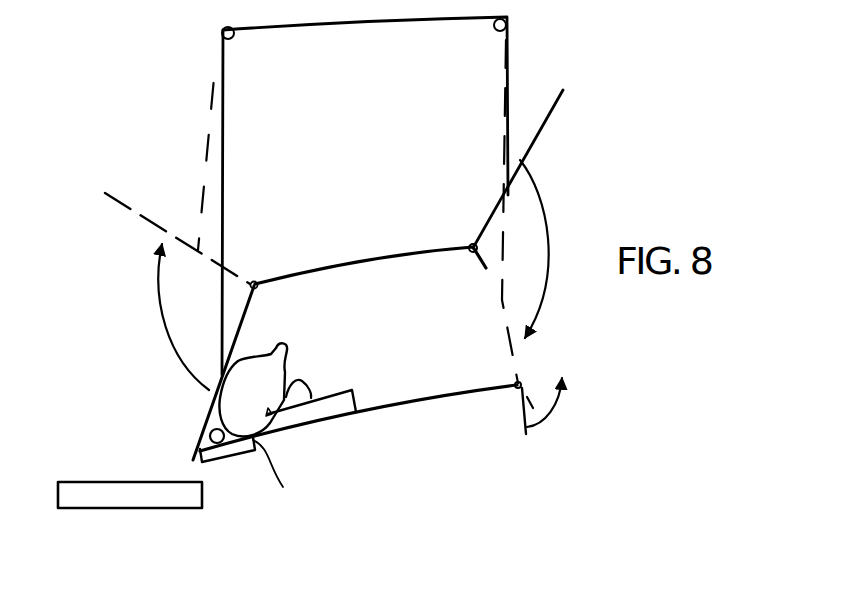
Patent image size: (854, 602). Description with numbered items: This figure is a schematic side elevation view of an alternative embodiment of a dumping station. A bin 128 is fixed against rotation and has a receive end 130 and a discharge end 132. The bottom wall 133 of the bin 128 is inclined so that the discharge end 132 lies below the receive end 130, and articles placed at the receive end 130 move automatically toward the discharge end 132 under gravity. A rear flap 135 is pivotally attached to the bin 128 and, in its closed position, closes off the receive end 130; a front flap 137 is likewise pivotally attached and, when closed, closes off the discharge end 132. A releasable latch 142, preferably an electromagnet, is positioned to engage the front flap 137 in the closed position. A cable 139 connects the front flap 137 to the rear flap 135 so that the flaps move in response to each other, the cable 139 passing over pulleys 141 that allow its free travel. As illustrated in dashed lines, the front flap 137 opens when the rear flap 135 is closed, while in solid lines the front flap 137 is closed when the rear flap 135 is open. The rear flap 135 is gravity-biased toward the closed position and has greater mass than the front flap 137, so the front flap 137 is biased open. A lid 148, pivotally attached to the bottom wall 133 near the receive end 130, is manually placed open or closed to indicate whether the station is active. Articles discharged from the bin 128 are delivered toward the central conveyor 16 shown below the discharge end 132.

The central conveyor 16 is at (118, 497).
The bin 128 is at (379, 258).
The receive end 130 is at (482, 269).
The discharge end 132 is at (246, 321).
The bottom wall 133 is at (401, 410).
The rear flap 135 is at (542, 128).
The front flap 137 is at (200, 432).
The cable 139 is at (223, 157).
The pulleys 141 is at (233, 40).
The releasable latch 142 is at (225, 452).
The lid 148 is at (524, 415).